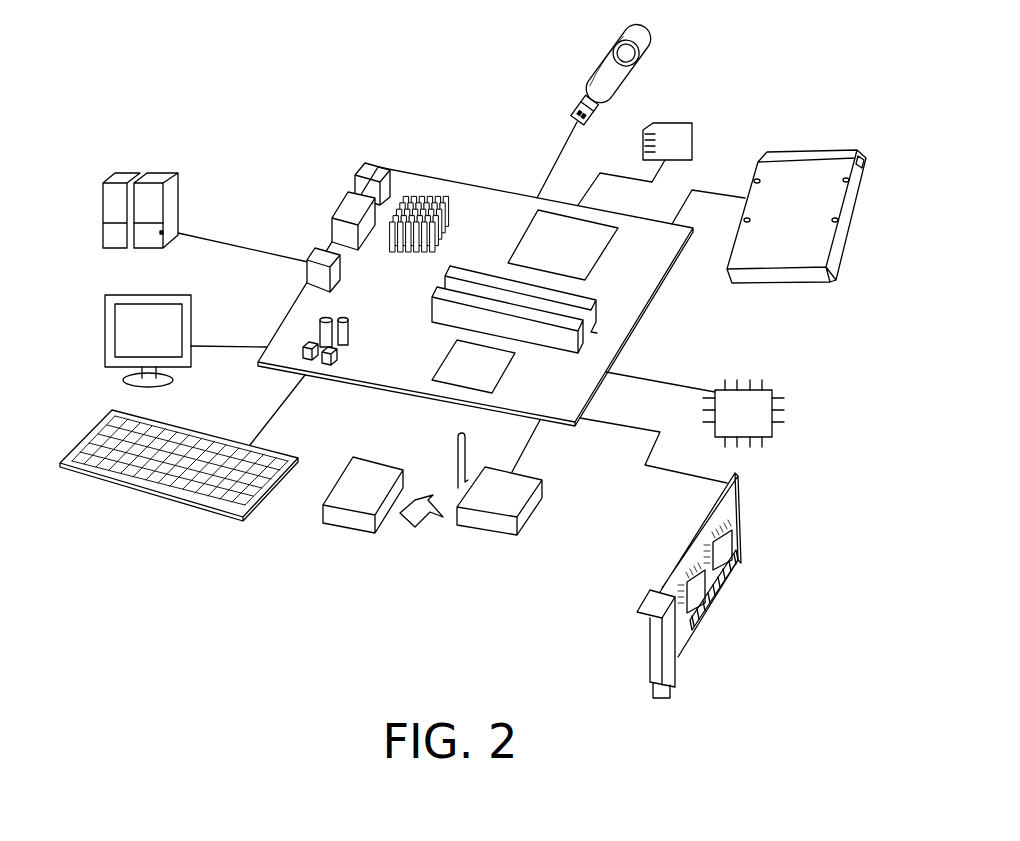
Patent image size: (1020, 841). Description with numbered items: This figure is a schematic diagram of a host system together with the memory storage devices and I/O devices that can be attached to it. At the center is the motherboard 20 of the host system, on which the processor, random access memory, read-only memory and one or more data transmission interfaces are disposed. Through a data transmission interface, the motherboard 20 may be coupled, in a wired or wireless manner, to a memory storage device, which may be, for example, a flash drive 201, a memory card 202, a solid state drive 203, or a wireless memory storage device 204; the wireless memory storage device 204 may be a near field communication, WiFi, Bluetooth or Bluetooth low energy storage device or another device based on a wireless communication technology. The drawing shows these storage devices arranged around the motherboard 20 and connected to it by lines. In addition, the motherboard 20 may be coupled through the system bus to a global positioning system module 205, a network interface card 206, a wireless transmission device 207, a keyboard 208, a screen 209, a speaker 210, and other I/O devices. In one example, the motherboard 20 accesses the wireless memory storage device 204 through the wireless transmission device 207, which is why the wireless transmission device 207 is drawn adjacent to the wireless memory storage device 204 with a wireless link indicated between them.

The motherboard 20 is at (478, 203).
The flash drive 201 is at (597, 60).
The memory card 202 is at (693, 130).
The solid state drive 203 is at (815, 150).
The wireless memory storage device 204 is at (337, 472).
The global positioning system module 205 is at (783, 412).
The network interface card 206 is at (738, 533).
The wireless transmission device 207 is at (533, 517).
The keyboard 208 is at (183, 497).
The screen 209 is at (104, 348).
The speaker 210 is at (102, 235).